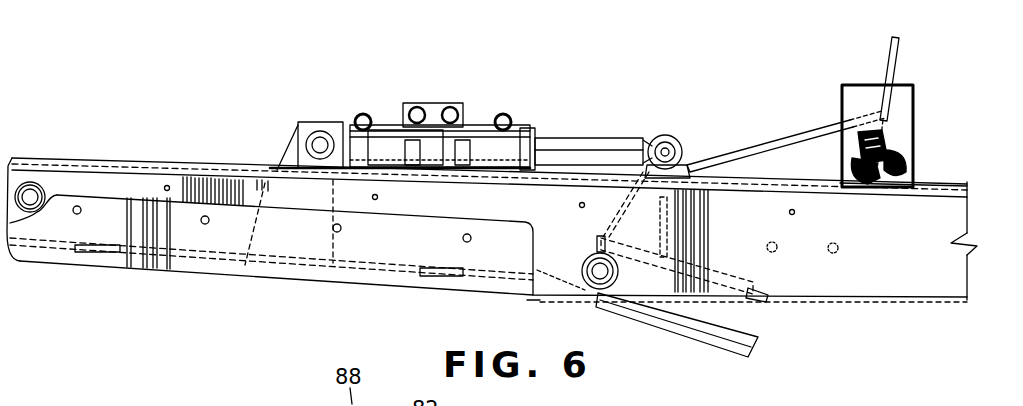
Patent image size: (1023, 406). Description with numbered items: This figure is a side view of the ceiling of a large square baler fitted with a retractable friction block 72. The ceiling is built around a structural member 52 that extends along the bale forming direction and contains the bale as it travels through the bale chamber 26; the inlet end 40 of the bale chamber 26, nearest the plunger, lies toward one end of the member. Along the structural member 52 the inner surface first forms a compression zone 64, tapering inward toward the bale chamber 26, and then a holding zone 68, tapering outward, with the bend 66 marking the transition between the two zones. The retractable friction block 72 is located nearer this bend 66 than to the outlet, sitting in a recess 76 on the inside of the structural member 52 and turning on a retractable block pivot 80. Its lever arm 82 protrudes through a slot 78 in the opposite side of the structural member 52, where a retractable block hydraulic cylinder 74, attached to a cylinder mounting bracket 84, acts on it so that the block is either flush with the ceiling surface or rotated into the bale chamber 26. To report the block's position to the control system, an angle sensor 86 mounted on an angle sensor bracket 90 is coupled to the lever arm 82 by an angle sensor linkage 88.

The bale chamber 26 is at (364, 329).
The inlet end 40 is at (72, 280).
The structural member 52 is at (955, 192).
The compression zone 64 is at (240, 277).
The bend 66 is at (527, 300).
The holding zone 68 is at (930, 298).
The retractable friction block 72 is at (693, 342).
The retractable block hydraulic cylinder 74 is at (518, 137).
The recess 76 is at (768, 297).
The slot 78 is at (617, 180).
The retractable block pivot 80 is at (595, 297).
The lever arm 82 is at (682, 163).
The cylinder mounting bracket 84 is at (282, 168).
The angle sensor 86 is at (890, 150).
The angle sensor linkage 88 is at (772, 138).
The angle sensor bracket 90 is at (900, 85).